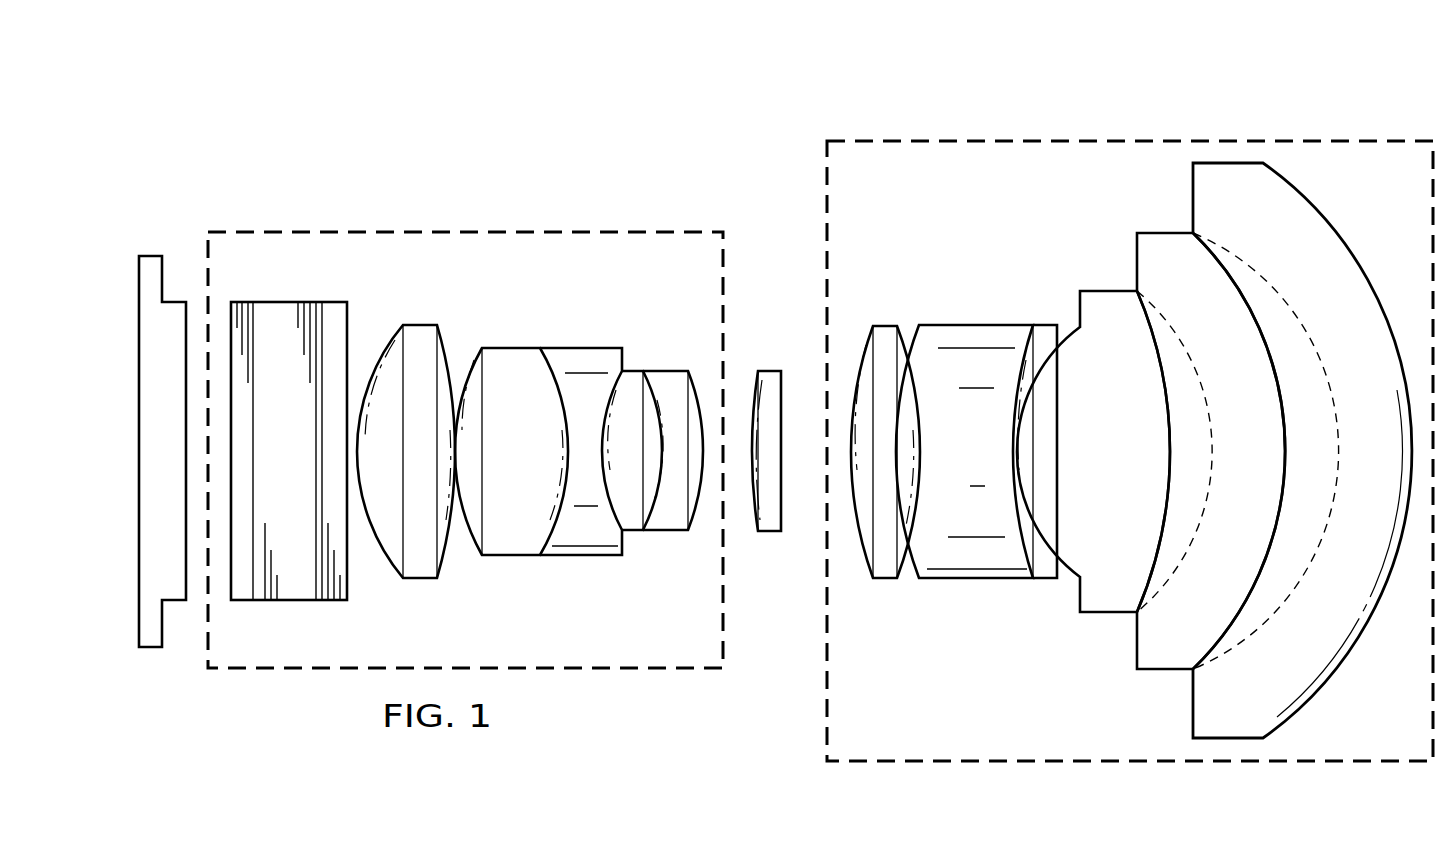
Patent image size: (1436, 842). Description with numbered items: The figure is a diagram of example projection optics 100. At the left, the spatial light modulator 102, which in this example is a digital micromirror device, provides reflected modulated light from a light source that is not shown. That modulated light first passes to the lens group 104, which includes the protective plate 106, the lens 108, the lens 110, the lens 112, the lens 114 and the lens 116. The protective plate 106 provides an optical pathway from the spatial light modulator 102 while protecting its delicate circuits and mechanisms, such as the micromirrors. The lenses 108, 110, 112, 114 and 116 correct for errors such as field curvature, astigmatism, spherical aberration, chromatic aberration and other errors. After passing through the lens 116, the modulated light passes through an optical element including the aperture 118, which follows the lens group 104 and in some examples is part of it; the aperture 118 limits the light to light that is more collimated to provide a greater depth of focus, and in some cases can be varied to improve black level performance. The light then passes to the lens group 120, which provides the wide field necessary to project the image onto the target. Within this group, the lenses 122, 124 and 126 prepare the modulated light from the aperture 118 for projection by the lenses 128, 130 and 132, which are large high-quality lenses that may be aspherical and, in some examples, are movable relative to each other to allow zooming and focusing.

The projection optics 100 is at (399, 123).
The spatial light modulator 102 is at (139, 450).
The lens group 104 is at (330, 232).
The protective plate 106 is at (288, 301).
The lens 108 is at (418, 324).
The lens 110 is at (511, 347).
The lens 112 is at (581, 347).
The lens 114 is at (632, 370).
The lens 116 is at (672, 370).
The aperture 118 is at (770, 370).
The lens group 120 is at (1270, 141).
The lens 122 is at (885, 325).
The lens 124 is at (975, 325).
The lens 126 is at (1045, 325).
The lens 128 is at (1105, 290).
The lens 130 is at (1163, 232).
The lens 132 is at (1193, 703).